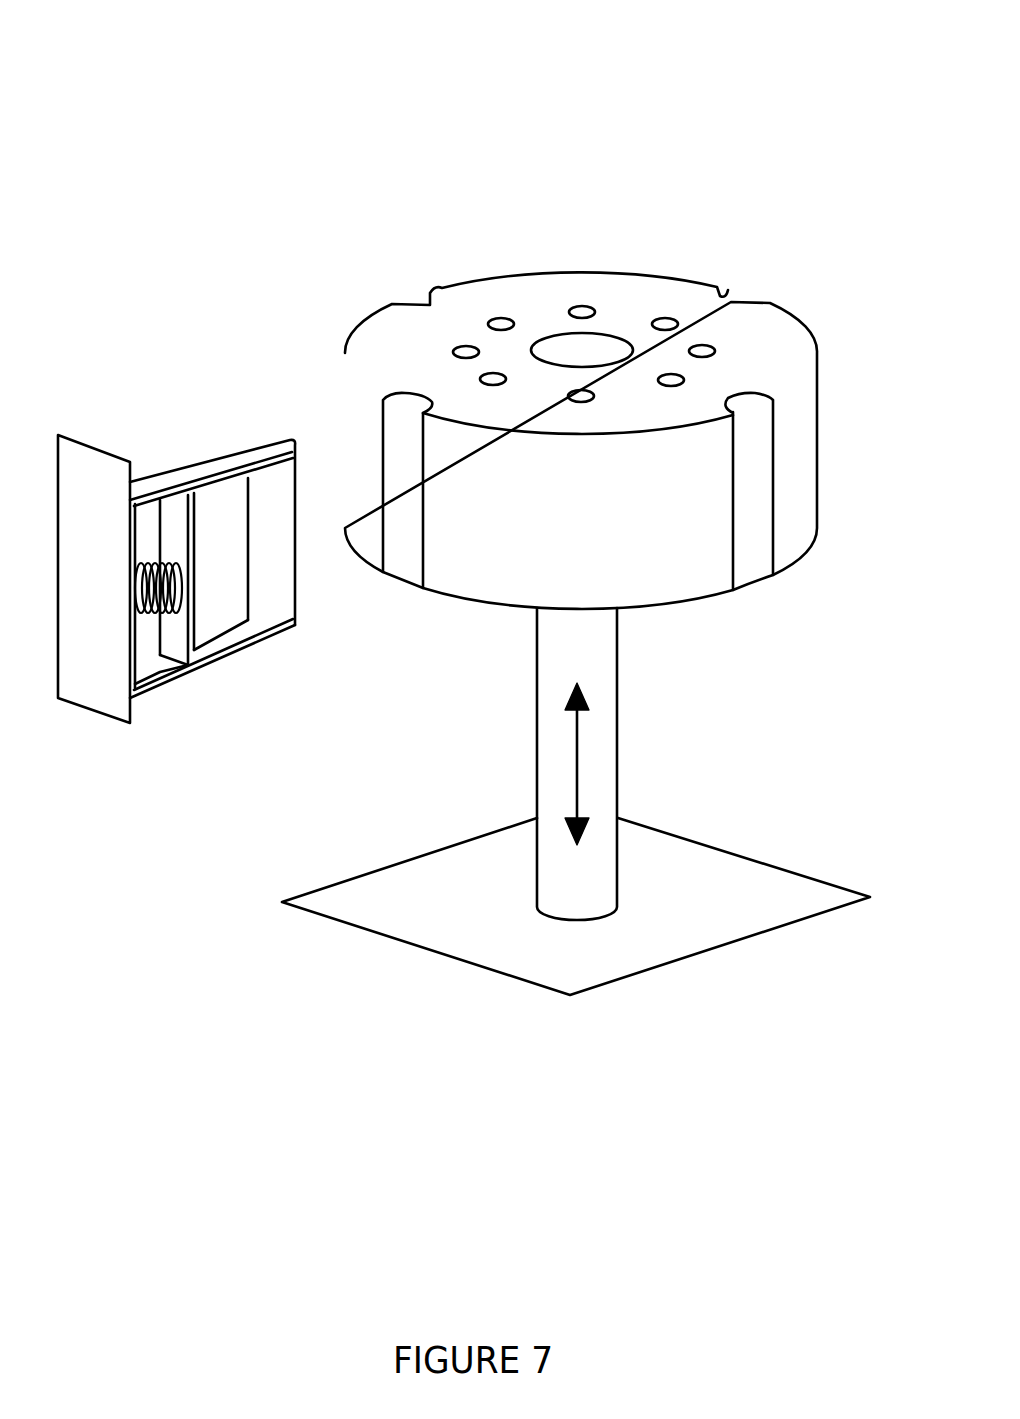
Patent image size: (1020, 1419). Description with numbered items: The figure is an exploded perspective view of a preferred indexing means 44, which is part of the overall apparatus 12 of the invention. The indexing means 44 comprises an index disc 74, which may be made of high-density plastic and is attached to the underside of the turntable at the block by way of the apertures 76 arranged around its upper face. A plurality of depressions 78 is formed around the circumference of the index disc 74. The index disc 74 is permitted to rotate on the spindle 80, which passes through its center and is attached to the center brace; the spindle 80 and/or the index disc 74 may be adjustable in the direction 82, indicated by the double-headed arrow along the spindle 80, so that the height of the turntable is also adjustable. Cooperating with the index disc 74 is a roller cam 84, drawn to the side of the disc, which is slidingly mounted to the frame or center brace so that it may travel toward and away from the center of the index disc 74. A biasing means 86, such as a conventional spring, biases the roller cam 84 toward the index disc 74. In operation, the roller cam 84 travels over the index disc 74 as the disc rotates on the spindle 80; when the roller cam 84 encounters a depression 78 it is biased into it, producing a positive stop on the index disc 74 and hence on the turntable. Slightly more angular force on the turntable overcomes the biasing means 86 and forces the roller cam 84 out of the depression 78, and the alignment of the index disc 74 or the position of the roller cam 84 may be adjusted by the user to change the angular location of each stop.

The apparatus 12 is at (88, 630).
The indexing means 44 is at (590, 509).
The index disc 74 is at (608, 283).
The apertures 76 is at (579, 306).
The depressions 78 is at (752, 524).
The spindle 80 is at (592, 903).
The direction 82 is at (578, 765).
The roller cam 84 is at (283, 510).
The biasing means 86 is at (180, 600).